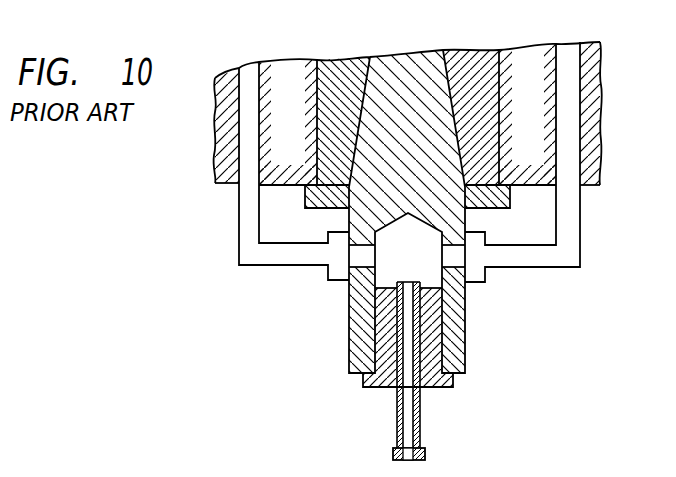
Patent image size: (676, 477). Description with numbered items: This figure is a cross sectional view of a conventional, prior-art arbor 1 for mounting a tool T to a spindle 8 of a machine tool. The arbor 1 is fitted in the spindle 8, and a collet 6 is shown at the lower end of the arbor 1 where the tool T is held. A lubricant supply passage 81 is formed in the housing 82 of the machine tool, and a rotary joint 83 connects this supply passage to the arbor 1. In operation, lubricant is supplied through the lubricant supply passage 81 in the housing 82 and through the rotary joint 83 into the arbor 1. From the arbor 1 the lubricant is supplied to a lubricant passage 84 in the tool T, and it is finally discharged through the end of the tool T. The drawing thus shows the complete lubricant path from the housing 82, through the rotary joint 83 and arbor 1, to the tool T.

The arbor 1 is at (417, 70).
The spindle 8 is at (478, 65).
The housing 82 is at (527, 68).
The lubricant supply passage 81 is at (575, 224).
The rotary joint 83 is at (338, 270).
The collet 6 is at (432, 377).
The lubricant passage 84 is at (412, 427).
The tool T is at (397, 427).